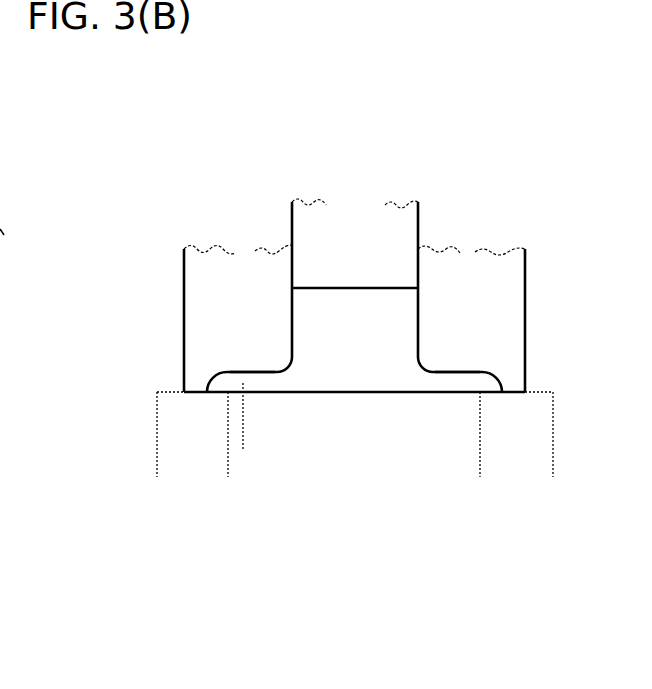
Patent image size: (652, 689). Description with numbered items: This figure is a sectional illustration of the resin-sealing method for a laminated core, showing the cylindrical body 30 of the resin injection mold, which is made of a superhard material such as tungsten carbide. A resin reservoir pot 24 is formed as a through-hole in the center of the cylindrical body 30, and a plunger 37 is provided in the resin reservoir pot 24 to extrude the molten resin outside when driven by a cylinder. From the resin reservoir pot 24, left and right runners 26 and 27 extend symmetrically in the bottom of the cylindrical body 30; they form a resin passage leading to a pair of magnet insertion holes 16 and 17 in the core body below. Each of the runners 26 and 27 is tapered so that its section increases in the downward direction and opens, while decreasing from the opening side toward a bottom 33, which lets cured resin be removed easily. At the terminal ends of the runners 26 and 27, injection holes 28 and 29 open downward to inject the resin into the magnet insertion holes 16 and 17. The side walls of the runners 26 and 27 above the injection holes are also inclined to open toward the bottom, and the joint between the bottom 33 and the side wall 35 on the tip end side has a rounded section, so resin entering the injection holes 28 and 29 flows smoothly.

The magnet insertion hole 16 is at (180, 425).
The magnet insertion hole 17 is at (518, 437).
The resin reservoir pot 24 is at (368, 317).
The runner 26 is at (243, 450).
The runner 27 is at (452, 382).
The injection hole 28 is at (220, 397).
The injection hole 29 is at (488, 395).
The cylindrical body 30 is at (217, 288).
The bottom 33 is at (262, 372).
The side wall on the tip end side 35 is at (213, 373).
The plunger 37 is at (318, 283).